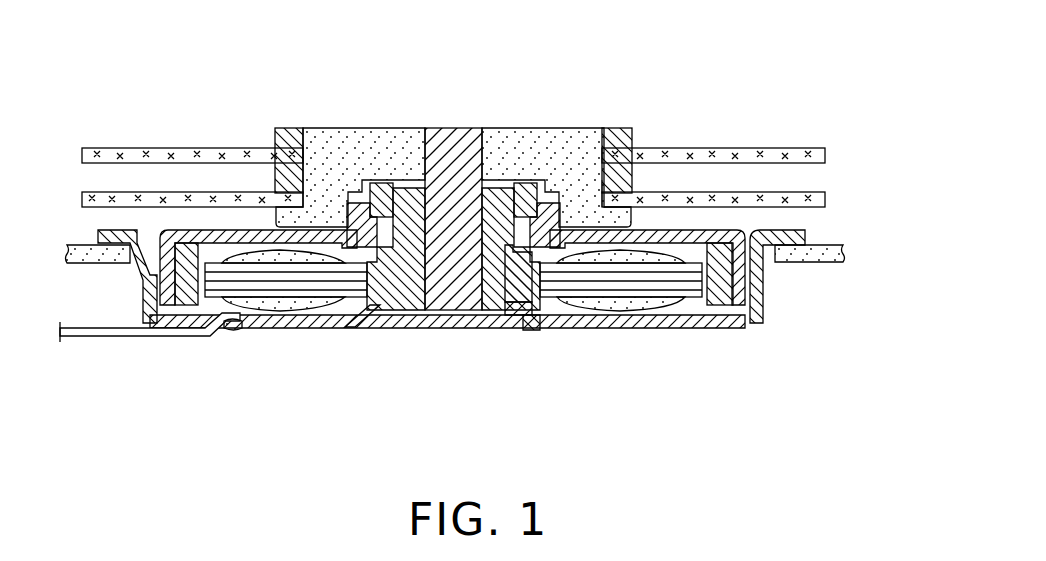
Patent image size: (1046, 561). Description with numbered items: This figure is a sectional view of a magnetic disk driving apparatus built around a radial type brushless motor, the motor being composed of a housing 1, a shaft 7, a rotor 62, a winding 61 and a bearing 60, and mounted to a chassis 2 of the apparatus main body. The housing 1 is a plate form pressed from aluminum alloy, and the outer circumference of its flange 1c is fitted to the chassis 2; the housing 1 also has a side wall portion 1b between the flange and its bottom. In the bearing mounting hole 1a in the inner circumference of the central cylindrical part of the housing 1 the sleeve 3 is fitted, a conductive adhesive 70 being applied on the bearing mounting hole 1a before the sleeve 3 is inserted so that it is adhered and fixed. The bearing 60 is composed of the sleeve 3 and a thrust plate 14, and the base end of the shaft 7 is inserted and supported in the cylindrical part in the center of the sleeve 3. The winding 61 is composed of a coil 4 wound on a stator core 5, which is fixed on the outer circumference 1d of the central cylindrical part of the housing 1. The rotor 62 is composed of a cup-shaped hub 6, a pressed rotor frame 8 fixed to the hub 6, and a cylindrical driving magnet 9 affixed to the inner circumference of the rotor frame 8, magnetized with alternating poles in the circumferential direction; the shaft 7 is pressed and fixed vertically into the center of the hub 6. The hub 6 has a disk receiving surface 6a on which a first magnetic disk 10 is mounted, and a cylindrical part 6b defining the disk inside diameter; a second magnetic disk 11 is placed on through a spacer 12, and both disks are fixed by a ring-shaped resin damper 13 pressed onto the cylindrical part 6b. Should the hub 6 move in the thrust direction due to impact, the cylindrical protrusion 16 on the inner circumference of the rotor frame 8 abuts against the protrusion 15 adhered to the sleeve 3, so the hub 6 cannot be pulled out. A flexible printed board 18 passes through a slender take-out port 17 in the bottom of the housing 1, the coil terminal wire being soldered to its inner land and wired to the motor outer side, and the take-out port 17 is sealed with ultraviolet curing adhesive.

The housing 1 is at (710, 330).
The bearing mounting hole 1a is at (513, 305).
The frame side wall 1b is at (758, 285).
The flange 1c is at (790, 240).
The outer circumference of the central cylindrical part 1d is at (545, 290).
The chassis 2 is at (845, 258).
The sleeve 3 is at (385, 320).
The coil 4 is at (278, 300).
The stator core 5 is at (232, 287).
The hub 6 is at (585, 140).
The disk receiving surface 6a is at (640, 212).
The cylindrical part 6b is at (612, 190).
The shaft 7 is at (445, 135).
The rotor frame 8 is at (720, 232).
The driving magnet 9 is at (725, 308).
The magnetic disk 10 is at (158, 195).
The magnetic disk 11 is at (215, 156).
The spacer 12 is at (290, 178).
The damper 13 is at (290, 130).
The thrust plate 14 is at (425, 325).
The protrusion 15 is at (515, 190).
The cylindrical protrusion 16 is at (540, 185).
The take-out port 17 is at (232, 334).
The flexible printed board 18 is at (100, 338).
The bearing 60 is at (437, 403).
The winding 61 is at (255, 332).
The rotor 62 is at (752, 115).
The conductive adhesive 70 is at (350, 325).